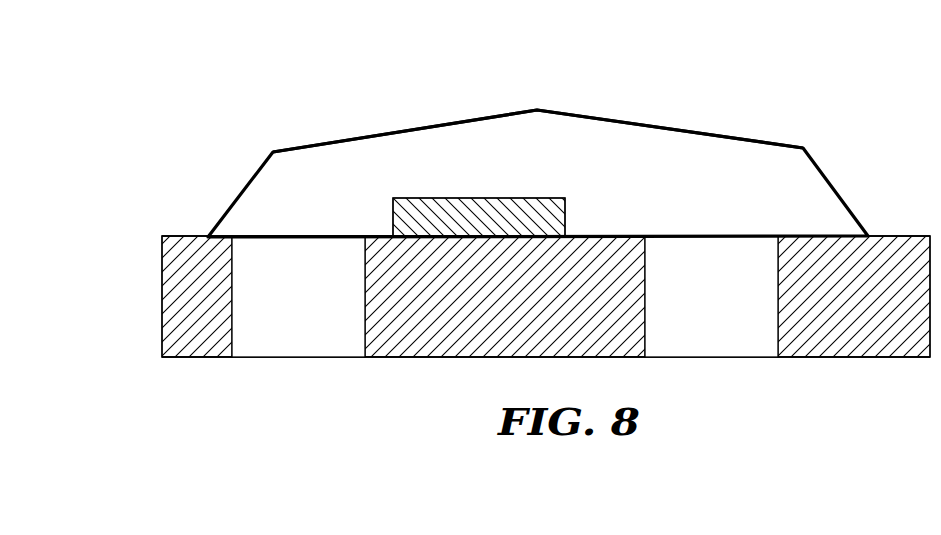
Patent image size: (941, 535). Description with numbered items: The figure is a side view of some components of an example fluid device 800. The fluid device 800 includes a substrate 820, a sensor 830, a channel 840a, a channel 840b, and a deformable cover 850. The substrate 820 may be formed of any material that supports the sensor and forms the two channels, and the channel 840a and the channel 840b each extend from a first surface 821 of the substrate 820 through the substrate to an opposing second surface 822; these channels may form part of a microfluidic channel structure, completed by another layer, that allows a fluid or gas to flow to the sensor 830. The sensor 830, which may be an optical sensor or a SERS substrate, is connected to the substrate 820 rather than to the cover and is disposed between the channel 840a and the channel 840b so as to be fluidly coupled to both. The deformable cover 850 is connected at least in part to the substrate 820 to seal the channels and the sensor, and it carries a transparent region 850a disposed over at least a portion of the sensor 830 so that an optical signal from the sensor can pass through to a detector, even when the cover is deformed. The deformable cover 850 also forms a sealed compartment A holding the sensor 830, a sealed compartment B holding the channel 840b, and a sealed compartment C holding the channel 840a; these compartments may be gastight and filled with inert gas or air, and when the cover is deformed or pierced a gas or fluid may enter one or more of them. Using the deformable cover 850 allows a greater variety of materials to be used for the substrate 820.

The fluid device 800 is at (520, 223).
The substrate 820 is at (520, 309).
The first surface 821 is at (168, 234).
The second surface 822 is at (195, 359).
The sensor 830 is at (457, 227).
The channel 840a is at (320, 333).
The channel 840b is at (722, 342).
The deformable cover 850 is at (538, 131).
The transparent region 850a is at (528, 85).
The sealed compartment A is at (609, 133).
The sealed compartment B is at (704, 271).
The sealed compartment C is at (292, 259).